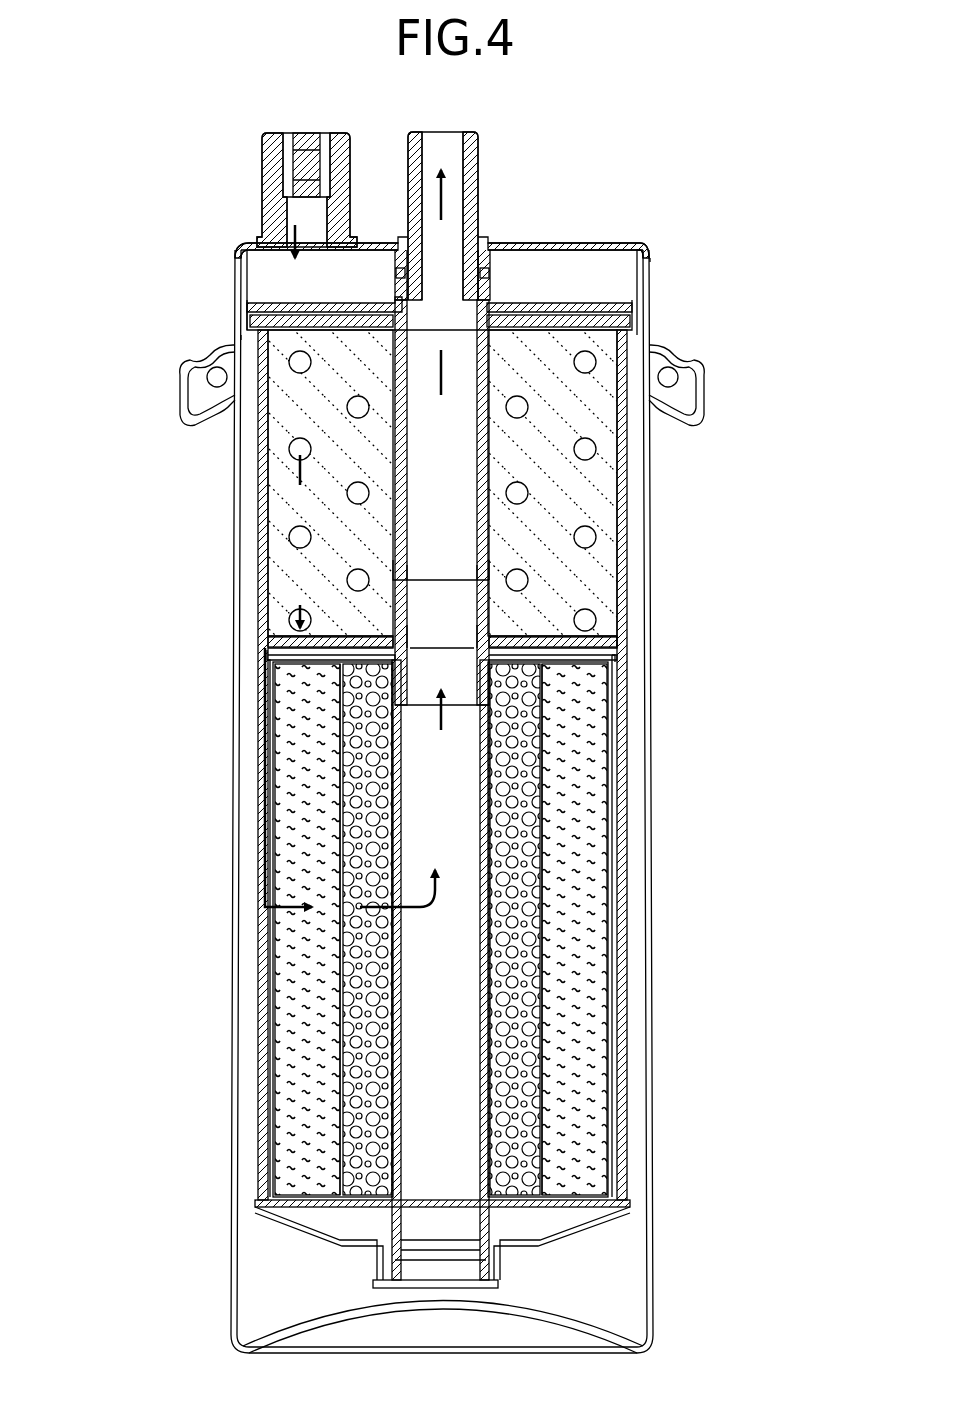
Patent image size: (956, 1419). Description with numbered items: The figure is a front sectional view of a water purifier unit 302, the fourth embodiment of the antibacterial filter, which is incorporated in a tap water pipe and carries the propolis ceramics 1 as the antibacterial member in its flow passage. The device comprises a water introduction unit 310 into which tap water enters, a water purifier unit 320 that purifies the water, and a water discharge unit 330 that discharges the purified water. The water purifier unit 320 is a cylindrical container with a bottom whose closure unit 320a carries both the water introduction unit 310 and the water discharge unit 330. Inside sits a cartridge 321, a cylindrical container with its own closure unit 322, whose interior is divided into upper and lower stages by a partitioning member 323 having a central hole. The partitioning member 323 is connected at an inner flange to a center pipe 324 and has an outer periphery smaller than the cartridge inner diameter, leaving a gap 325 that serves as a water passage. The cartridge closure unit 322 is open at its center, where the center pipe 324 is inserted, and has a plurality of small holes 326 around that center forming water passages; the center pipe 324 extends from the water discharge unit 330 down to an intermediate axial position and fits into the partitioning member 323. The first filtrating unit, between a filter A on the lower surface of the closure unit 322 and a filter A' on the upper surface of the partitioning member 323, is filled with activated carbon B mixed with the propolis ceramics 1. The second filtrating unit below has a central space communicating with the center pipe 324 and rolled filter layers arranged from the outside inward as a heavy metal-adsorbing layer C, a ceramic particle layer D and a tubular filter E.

The water purifier unit 302 is at (680, 242).
The water introduction unit 310 is at (297, 217).
The water purifier unit 320 is at (226, 644).
The closure unit 320a is at (530, 243).
The cartridge 321 is at (258, 480).
The closure unit 322 is at (392, 304).
The partitioning member 323 is at (610, 658).
The center pipe 324 is at (402, 468).
The gap 325 is at (614, 693).
The small holes 326 is at (322, 305).
The water discharge unit 330 is at (447, 140).
The propolis ceramics 1 is at (585, 452).
The filter A is at (480, 315).
The filter A' is at (497, 613).
The activated carbon B is at (607, 497).
The heavy metal-adsorbing layer C is at (580, 1178).
The ceramic particle layer D is at (512, 1178).
The tubular filter E is at (480, 1095).